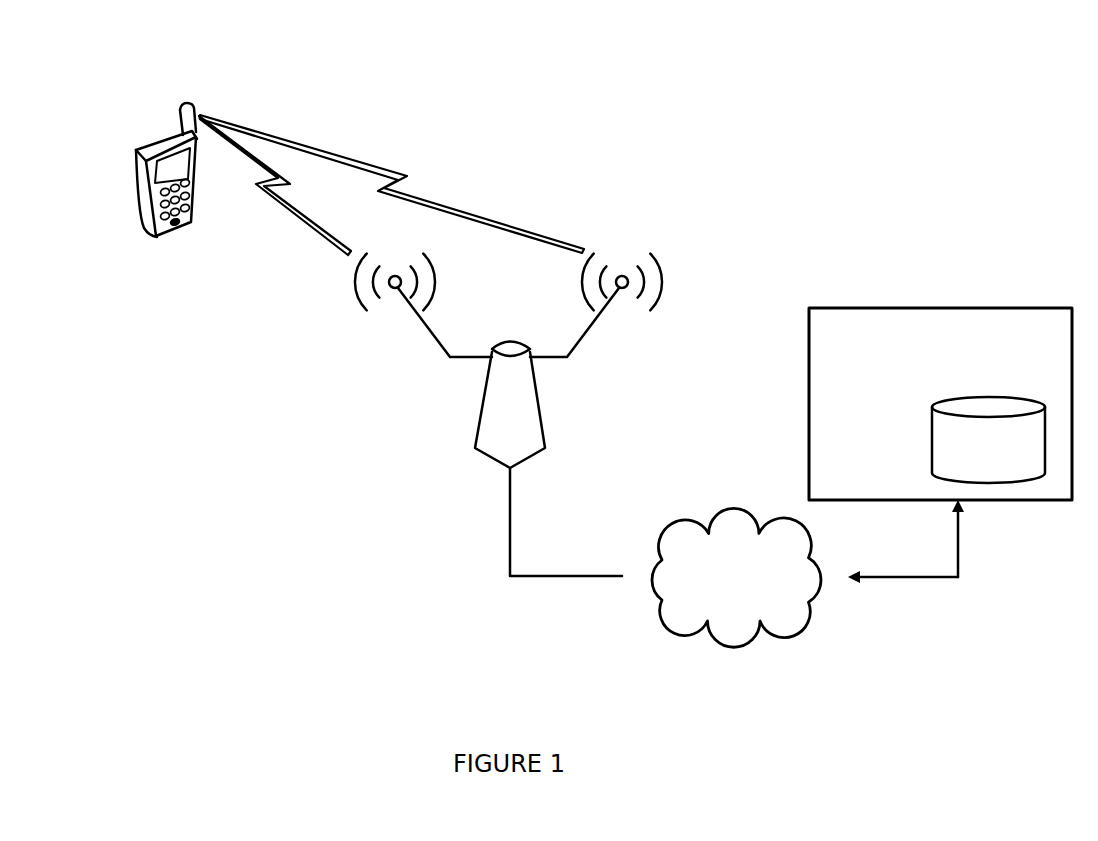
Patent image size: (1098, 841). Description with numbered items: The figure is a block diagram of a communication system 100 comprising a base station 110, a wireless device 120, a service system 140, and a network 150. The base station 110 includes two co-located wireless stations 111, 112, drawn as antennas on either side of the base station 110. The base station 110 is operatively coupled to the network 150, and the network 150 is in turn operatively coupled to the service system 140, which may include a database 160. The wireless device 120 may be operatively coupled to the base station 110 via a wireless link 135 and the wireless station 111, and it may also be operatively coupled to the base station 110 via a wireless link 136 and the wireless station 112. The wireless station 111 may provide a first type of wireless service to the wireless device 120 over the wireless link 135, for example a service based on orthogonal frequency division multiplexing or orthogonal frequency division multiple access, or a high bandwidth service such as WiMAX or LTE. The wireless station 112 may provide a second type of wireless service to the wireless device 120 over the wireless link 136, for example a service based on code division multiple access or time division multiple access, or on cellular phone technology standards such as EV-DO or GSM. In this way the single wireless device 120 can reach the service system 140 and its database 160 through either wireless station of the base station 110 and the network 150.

The communication system 100 is at (742, 75).
The base station 110 is at (487, 457).
The wireless station 111 is at (435, 339).
The wireless station 112 is at (579, 343).
The wireless device 120 is at (151, 239).
The wireless link 135 is at (305, 221).
The wireless link 136 is at (390, 171).
The service system 140 is at (905, 420).
The network 150 is at (753, 598).
The database 160 is at (1007, 455).